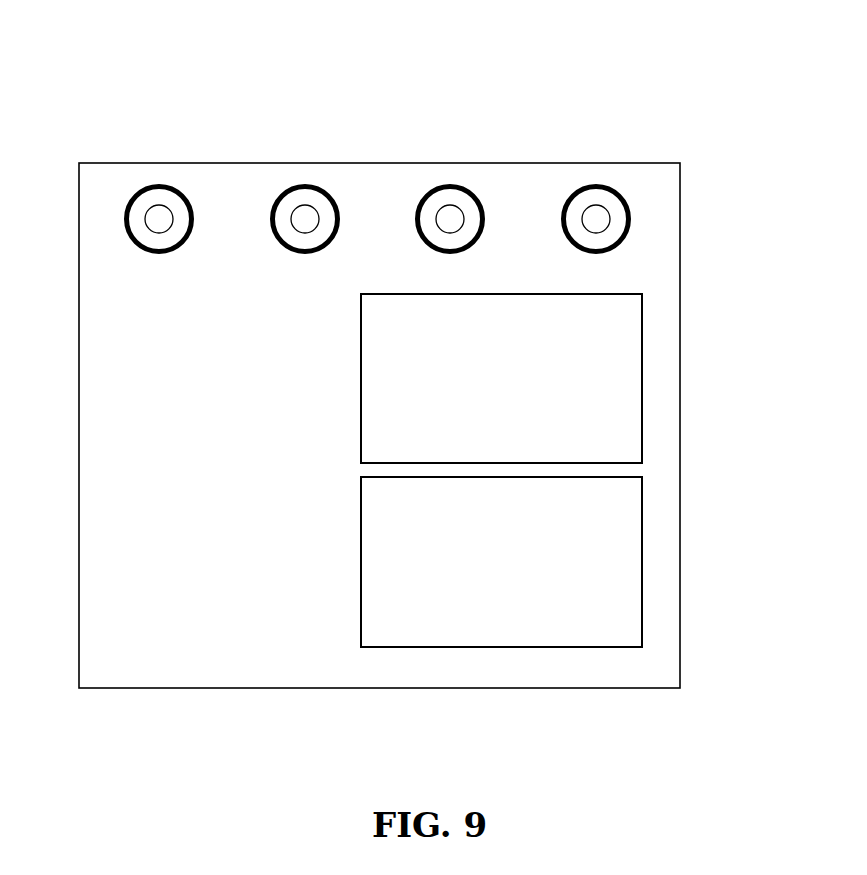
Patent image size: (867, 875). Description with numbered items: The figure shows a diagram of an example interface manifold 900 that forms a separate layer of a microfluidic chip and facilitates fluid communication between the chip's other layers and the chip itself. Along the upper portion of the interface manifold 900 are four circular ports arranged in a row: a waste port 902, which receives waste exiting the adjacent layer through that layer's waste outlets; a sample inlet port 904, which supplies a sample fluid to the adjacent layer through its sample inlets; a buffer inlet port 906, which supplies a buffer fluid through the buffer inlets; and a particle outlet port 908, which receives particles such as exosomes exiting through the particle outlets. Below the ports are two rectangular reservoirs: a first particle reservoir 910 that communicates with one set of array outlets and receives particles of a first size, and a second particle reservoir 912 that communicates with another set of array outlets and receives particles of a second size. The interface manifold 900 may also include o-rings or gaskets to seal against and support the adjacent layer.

The interface manifold 900 is at (324, 52).
The waste port 902 is at (127, 175).
The sample inlet port 904 is at (277, 177).
The buffer inlet port 906 is at (423, 177).
The particle outlet port 908 is at (572, 174).
The first particle reservoir 910 is at (654, 311).
The second particle reservoir 912 is at (652, 526).